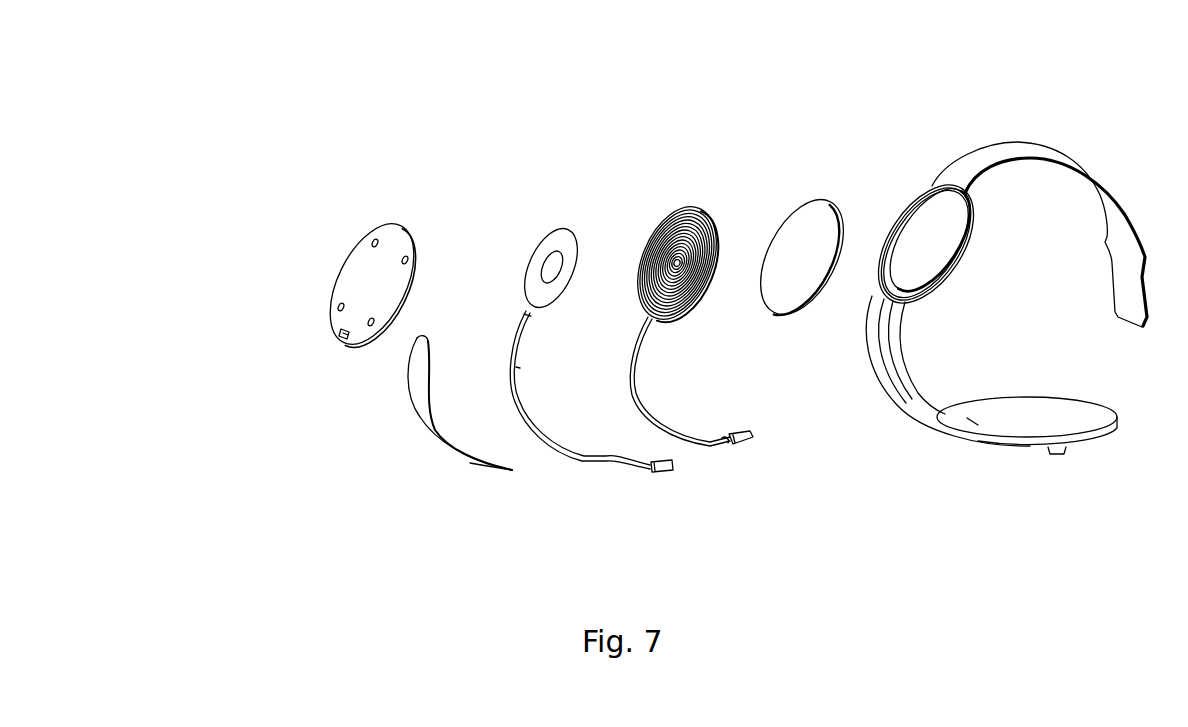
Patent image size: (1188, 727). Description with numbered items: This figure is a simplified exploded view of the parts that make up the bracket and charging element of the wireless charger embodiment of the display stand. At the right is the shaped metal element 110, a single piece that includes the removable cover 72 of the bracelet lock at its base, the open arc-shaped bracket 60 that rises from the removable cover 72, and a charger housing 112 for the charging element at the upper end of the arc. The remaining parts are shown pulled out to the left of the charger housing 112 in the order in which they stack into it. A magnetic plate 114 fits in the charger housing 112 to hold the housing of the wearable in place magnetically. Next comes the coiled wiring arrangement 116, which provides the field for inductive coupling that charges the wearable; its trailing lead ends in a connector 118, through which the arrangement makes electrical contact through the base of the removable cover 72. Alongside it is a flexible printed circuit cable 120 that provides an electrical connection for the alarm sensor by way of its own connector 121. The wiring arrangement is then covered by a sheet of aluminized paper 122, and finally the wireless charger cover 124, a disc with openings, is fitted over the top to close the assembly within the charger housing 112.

The bracket 60 is at (1080, 173).
The removable cover 72 is at (1030, 422).
The shaped metal element 110 is at (901, 436).
The charger housing 112 is at (947, 273).
The magnetic plate 114 is at (783, 268).
The coiled wiring arrangement 116 is at (630, 312).
The connector 118 is at (737, 438).
The flexible printed circuit cable 120 is at (518, 323).
The connector 121 is at (653, 470).
The aluminized paper 122 is at (430, 432).
The wireless charger cover 124 is at (373, 279).